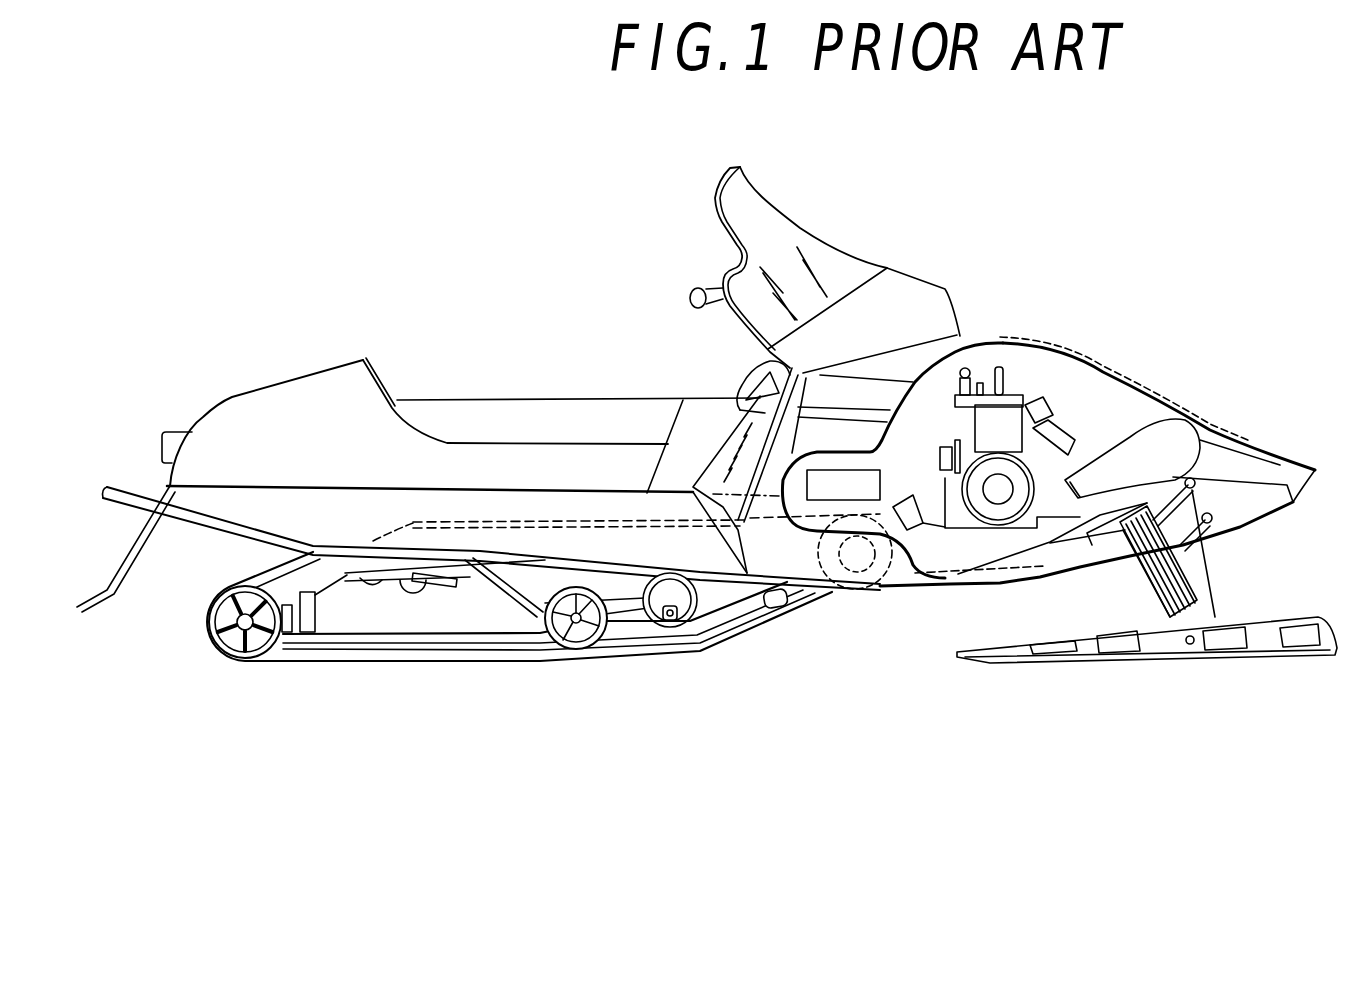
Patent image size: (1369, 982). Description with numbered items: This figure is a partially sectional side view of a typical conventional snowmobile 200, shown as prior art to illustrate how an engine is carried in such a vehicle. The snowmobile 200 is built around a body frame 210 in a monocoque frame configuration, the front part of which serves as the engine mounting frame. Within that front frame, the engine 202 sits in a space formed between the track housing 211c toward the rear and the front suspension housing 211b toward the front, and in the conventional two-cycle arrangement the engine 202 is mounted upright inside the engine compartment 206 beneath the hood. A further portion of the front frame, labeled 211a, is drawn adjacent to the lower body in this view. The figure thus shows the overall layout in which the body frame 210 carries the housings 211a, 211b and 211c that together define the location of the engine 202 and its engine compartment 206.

The snowmobile 200 is at (707, 445).
The engine 202 is at (1032, 396).
The engine compartment 206 is at (1132, 412).
The body frame 210 is at (734, 538).
The lower body panel 211a is at (970, 584).
The front suspension housing 211b is at (1074, 556).
The track housing 211c is at (880, 556).